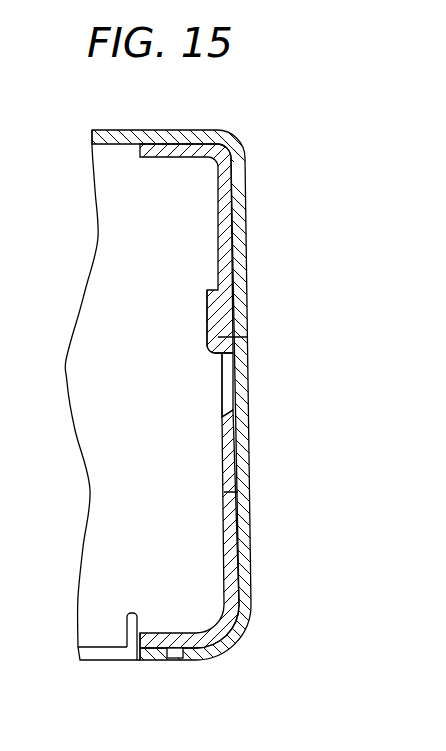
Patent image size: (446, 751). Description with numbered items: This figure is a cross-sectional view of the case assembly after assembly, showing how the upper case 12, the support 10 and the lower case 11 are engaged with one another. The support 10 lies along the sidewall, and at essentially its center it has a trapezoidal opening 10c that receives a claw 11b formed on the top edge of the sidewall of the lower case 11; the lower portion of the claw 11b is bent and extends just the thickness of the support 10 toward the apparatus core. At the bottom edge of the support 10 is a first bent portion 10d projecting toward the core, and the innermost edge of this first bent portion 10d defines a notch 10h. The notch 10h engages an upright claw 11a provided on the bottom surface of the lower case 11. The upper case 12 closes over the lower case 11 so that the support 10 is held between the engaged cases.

The support 10 is at (217, 218).
The upper case 12 is at (243, 204).
The lower case 11 is at (103, 660).
The claw 11a is at (148, 583).
The claw 11b is at (207, 325).
The trapezoidal opening 10c is at (228, 385).
The first bent portion 10d is at (167, 660).
The notch 10h is at (150, 684).